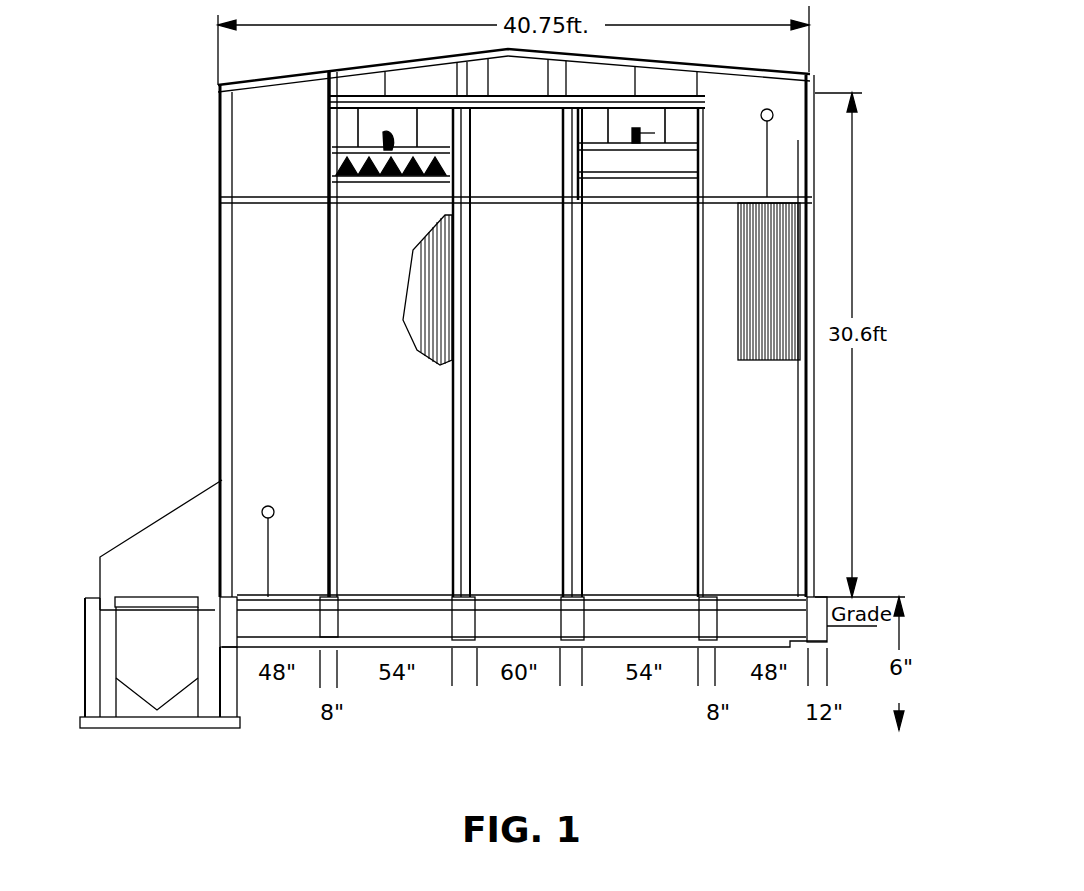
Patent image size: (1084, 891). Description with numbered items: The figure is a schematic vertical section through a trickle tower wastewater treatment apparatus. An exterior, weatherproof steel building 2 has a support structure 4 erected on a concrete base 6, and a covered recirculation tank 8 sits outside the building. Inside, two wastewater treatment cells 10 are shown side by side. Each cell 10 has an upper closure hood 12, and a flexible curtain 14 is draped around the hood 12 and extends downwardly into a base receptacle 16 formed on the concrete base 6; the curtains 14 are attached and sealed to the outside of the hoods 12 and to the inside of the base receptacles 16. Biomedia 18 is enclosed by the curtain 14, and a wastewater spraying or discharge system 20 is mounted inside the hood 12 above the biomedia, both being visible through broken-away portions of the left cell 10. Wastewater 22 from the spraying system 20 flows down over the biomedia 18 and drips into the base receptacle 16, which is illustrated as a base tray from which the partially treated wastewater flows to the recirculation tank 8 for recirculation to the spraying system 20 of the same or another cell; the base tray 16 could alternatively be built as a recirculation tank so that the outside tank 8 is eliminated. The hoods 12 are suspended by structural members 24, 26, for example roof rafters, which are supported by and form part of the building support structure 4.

The steel building 2 is at (195, 243).
The support structure 4 is at (232, 333).
The concrete base 6 is at (600, 648).
The recirculation tank 8 is at (168, 654).
The wastewater treatment cell 10 is at (315, 233).
The upper closure hood 12 is at (347, 147).
The flexible curtain 14 is at (353, 397).
The base receptacle 16 is at (380, 625).
The biomedia 18 is at (433, 302).
The wastewater spraying system 20 is at (388, 150).
The wastewater 22 is at (332, 157).
The structural member 24 is at (538, 104).
The structural member 26 is at (506, 60).